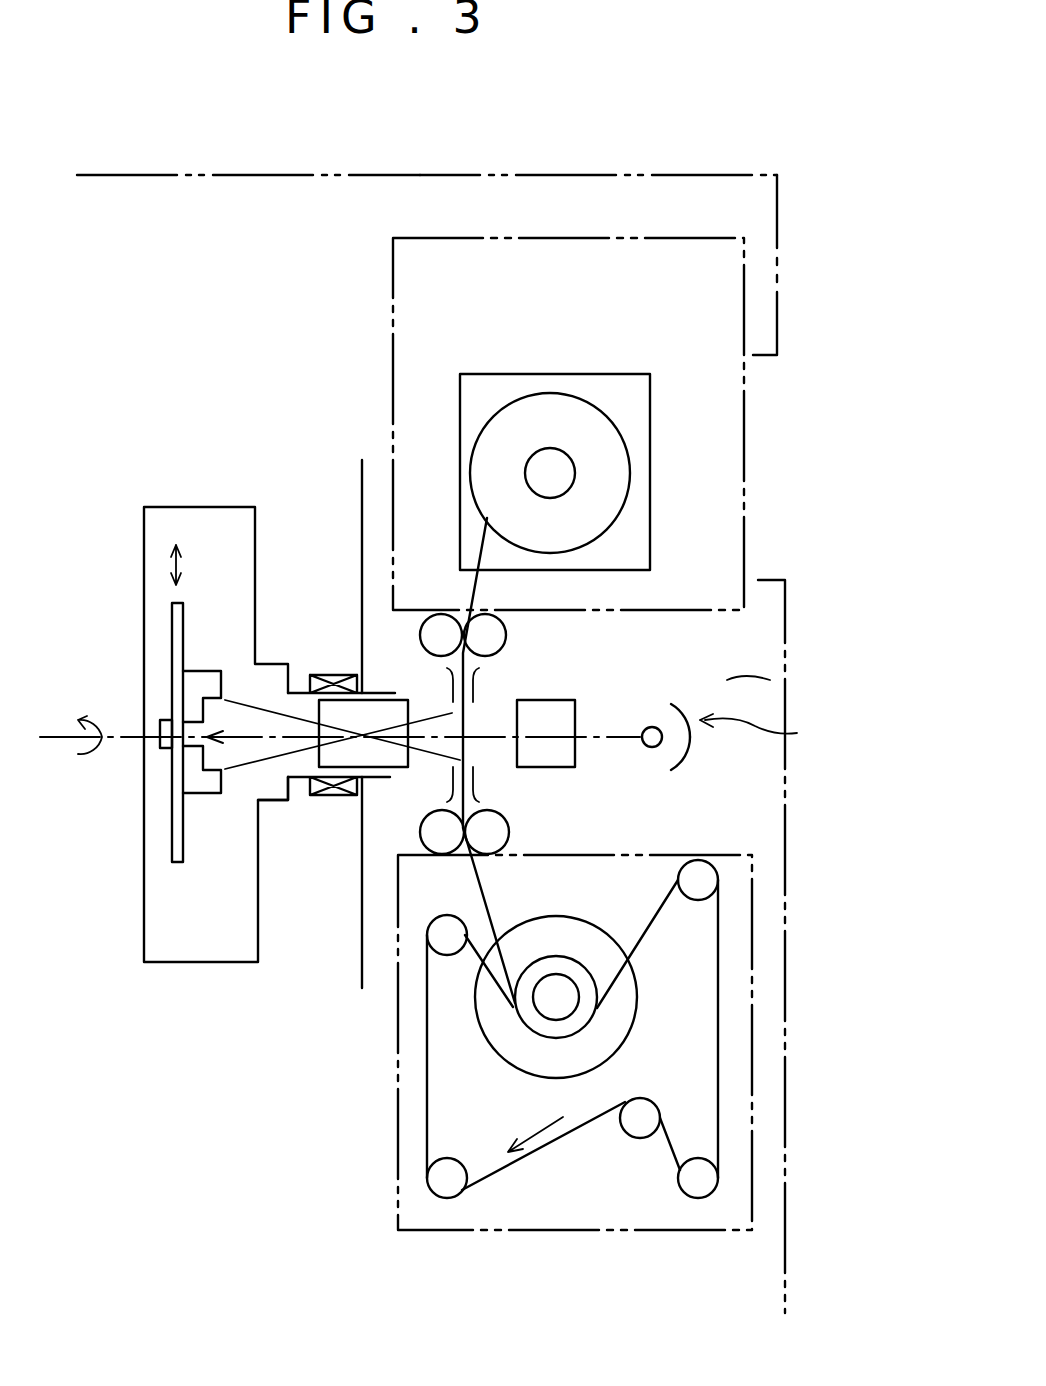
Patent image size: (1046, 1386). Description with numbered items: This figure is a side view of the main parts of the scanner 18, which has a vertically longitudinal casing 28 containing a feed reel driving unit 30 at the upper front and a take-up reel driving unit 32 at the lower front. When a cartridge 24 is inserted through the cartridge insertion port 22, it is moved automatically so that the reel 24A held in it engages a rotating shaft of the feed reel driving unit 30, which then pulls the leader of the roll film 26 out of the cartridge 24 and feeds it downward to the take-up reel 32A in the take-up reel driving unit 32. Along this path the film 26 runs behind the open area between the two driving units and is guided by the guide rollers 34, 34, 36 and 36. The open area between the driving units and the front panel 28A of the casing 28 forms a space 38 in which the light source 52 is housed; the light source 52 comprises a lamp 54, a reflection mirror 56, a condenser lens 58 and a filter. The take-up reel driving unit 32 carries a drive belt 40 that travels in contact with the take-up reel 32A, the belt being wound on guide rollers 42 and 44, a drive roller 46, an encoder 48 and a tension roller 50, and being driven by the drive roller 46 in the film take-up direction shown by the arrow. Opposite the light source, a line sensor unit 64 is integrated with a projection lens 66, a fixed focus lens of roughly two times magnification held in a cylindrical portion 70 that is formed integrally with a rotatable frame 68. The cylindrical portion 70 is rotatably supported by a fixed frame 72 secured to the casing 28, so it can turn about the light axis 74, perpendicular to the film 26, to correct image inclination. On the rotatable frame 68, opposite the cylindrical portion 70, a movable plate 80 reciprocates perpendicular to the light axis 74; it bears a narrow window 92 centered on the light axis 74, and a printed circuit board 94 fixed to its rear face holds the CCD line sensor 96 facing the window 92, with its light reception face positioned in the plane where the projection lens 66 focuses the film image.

The scanner 18 is at (469, 165).
The cartridge insertion port 22 is at (758, 462).
The cartridge 24 is at (632, 374).
The reel 24A is at (626, 446).
The roll film 26 is at (478, 873).
The casing 28 is at (290, 175).
The front panel 28A is at (790, 586).
The feed reel driving unit 30 is at (745, 253).
The take-up reel driving unit 32 is at (753, 1173).
The take-up reel 32A is at (638, 997).
The guide rollers 34 is at (439, 625).
The guide rollers 36 is at (426, 822).
The space 38 is at (770, 680).
The drive belt 40 is at (720, 1067).
The guide roller 42 is at (445, 943).
The guide roller 44 is at (703, 880).
The drive roller 46 is at (700, 1190).
The encoder 48 is at (633, 1127).
The tension roller 50 is at (448, 1197).
The light source 52 is at (772, 734).
The lamp 54 is at (690, 737).
The reflection mirror 56 is at (673, 768).
The condenser lens 58 is at (552, 768).
The line sensor unit 64 is at (190, 495).
The projection lens 66 is at (400, 700).
The rotatable frame 68 is at (258, 877).
The cylindrical portion 70 is at (383, 777).
The fixed frame 72 is at (362, 490).
The light axis 74 is at (594, 737).
The movable plate 80 is at (208, 794).
The window 92 is at (206, 722).
The printed circuit board 94 is at (170, 610).
The CCD line sensor 96 is at (165, 748).